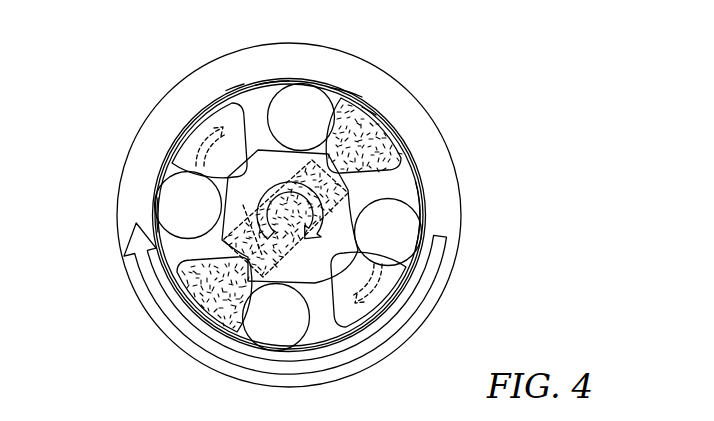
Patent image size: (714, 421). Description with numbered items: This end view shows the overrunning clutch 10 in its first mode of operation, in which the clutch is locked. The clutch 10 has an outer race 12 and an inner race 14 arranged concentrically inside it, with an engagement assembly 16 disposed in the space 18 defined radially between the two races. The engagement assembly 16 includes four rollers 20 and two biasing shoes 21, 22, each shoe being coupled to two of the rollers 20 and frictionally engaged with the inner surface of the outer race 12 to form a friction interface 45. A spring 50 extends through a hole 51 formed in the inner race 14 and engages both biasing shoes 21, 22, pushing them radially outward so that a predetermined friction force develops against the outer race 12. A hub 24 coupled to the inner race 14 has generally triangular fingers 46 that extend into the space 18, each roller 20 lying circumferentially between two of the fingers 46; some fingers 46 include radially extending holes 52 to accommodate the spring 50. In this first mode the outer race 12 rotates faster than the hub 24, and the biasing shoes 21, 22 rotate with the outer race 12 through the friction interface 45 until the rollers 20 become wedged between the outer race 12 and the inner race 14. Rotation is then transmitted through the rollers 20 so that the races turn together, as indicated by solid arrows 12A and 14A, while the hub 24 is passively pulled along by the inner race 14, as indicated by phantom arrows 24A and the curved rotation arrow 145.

The overrunning clutch 10 is at (93, 66).
The outer race 12 is at (438, 113).
The solid arrow 12A is at (288, 365).
The inner race 14 is at (363, 193).
The solid arrow 14A is at (313, 198).
The engagement assembly 16 is at (420, 197).
The space 18 is at (262, 93).
The rollers 20 is at (312, 83).
The biasing shoe 21 is at (155, 232).
The biasing shoe 22 is at (413, 160).
The hub 24 is at (248, 112).
The phantom arrows 24A is at (197, 137).
The friction interface 45 is at (350, 92).
The fingers 46 is at (235, 92).
The spring 50 is at (330, 172).
The hole 51 is at (255, 228).
The radially extending holes 52 is at (390, 130).
The rotation direction arrow 145 is at (180, 313).